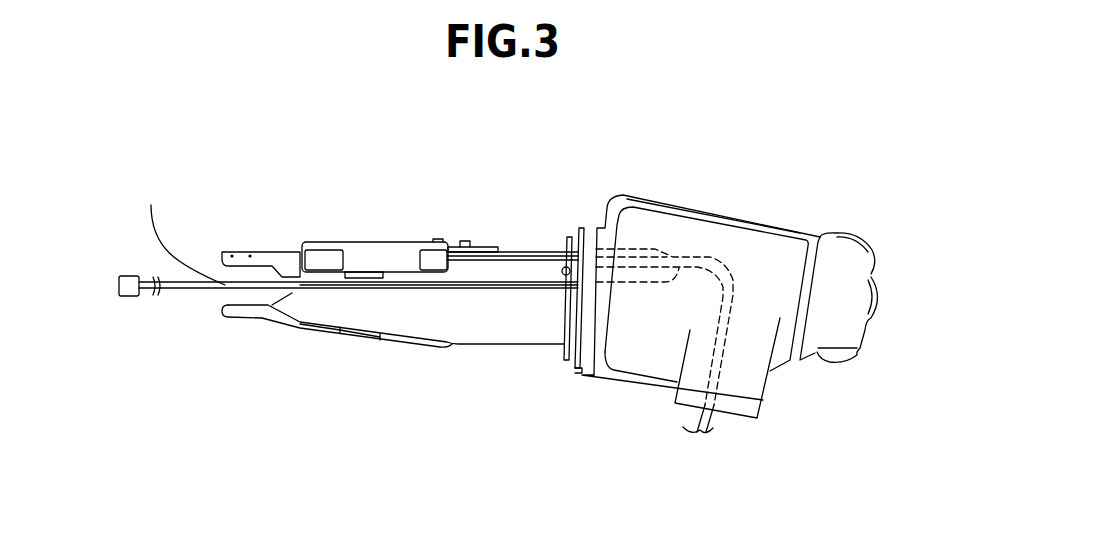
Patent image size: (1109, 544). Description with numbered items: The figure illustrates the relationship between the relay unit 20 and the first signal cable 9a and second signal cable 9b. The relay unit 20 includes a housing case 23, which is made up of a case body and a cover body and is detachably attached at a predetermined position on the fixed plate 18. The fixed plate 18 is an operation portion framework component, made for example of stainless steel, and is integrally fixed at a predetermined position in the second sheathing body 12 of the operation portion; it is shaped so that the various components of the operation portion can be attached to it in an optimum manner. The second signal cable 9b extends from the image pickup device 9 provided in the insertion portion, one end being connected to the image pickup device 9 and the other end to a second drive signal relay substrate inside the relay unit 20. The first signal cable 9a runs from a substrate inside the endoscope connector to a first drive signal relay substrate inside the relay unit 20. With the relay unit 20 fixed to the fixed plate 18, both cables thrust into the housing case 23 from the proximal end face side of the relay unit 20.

The image pickup device 9 is at (128, 286).
The first signal cable 9a is at (708, 422).
The second signal cable 9b is at (149, 279).
The second sheathing body 12 is at (794, 258).
The fixed plate 18 is at (477, 322).
The relay unit 20 is at (363, 245).
The housing case 23 is at (404, 243).